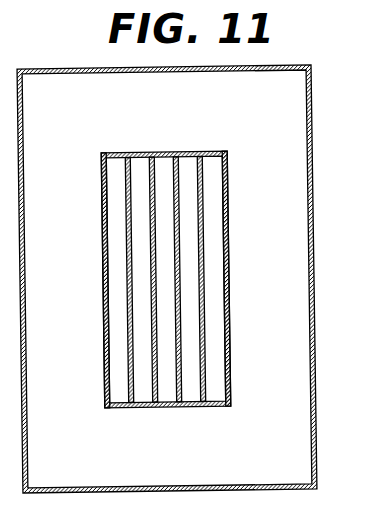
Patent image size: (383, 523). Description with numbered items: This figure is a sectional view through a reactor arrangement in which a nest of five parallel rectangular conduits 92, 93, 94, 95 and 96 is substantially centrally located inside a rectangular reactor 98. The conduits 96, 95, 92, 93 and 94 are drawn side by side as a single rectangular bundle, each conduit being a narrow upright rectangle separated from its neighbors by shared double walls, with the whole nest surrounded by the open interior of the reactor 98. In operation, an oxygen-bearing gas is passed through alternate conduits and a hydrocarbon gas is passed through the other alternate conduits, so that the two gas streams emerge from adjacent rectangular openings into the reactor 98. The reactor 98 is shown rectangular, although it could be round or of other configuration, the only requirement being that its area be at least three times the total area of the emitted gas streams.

The rectangular reactor 98 is at (314, 288).
The parallel rectangular conduit 96 is at (108, 154).
The parallel rectangular conduit 95 is at (136, 151).
The parallel rectangular conduit 92 is at (164, 151).
The parallel rectangular conduit 93 is at (189, 152).
The parallel rectangular conduit 94 is at (213, 153).